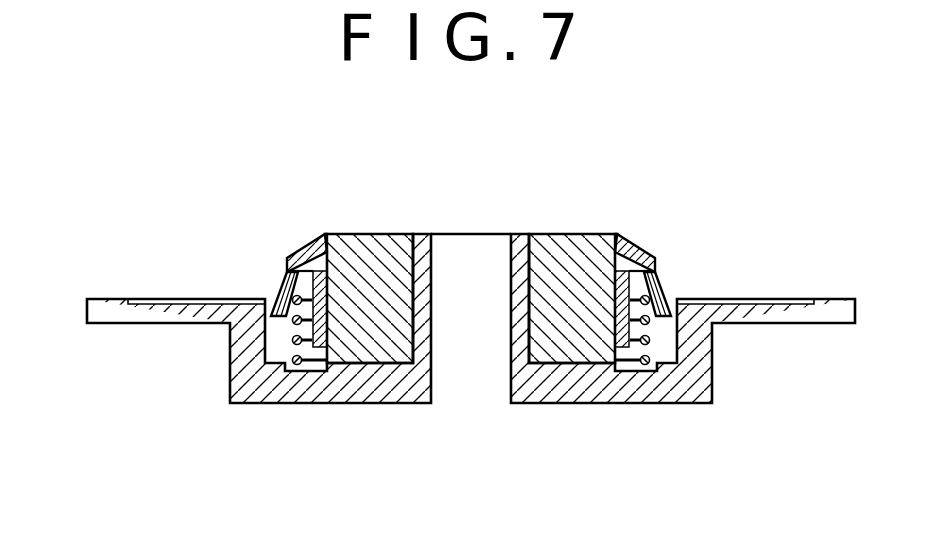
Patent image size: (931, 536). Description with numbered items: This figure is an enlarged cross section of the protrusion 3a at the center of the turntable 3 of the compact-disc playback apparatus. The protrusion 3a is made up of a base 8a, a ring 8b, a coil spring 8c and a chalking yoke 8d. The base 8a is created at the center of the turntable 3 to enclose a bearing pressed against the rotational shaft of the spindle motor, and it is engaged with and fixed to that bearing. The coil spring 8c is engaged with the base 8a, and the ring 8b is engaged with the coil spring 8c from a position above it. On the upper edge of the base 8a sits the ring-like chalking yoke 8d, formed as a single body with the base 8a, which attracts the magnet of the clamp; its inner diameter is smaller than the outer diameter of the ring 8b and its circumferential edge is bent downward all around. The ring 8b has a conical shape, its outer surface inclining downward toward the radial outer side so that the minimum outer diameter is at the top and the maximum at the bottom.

The turntable 3 is at (257, 381).
The protrusion 3a is at (660, 234).
The base 8a is at (359, 233).
The ring 8b is at (279, 297).
The coil spring 8c is at (302, 366).
The chalking yoke 8d is at (308, 244).